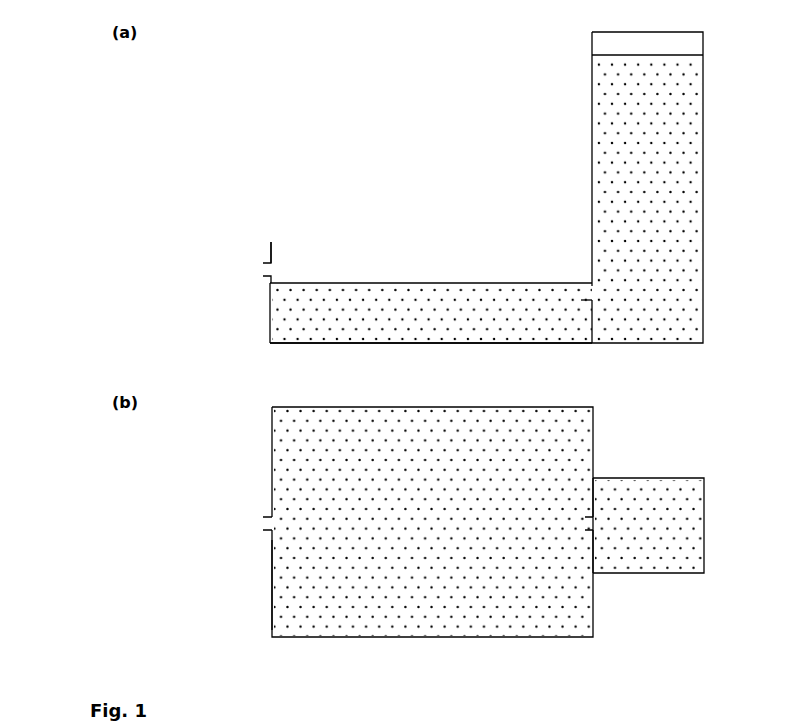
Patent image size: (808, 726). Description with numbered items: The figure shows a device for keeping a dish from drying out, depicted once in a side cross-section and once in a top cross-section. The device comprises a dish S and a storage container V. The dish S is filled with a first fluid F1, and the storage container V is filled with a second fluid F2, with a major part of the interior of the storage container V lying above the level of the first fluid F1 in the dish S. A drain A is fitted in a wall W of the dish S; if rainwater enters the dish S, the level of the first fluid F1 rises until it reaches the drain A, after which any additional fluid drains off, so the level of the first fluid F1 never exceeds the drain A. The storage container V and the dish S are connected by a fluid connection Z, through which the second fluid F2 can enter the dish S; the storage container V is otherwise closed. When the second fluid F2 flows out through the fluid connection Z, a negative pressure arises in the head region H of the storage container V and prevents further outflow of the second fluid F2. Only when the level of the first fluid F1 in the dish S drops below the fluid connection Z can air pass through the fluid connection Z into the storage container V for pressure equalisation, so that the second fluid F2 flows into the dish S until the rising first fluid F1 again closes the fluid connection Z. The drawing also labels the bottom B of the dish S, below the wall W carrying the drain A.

The first fluid F1 is at (467, 323).
The second fluid F2 is at (690, 173).
The vessel V is at (705, 106).
The headspace H is at (690, 43).
The connection zone Z is at (597, 295).
The aperture A is at (262, 269).
The sample chamber S is at (290, 232).
The wall W is at (268, 309).
The bottom B is at (300, 344).